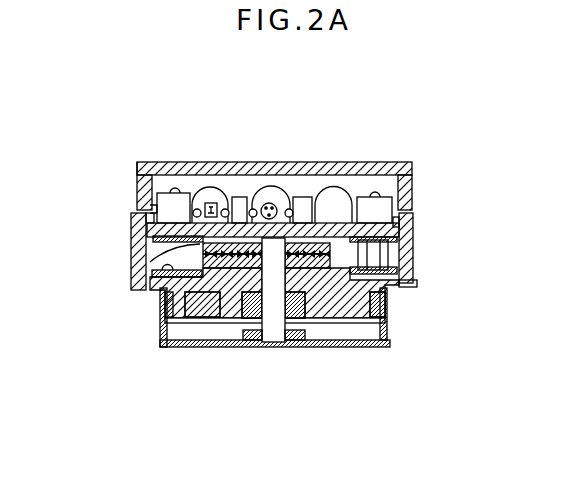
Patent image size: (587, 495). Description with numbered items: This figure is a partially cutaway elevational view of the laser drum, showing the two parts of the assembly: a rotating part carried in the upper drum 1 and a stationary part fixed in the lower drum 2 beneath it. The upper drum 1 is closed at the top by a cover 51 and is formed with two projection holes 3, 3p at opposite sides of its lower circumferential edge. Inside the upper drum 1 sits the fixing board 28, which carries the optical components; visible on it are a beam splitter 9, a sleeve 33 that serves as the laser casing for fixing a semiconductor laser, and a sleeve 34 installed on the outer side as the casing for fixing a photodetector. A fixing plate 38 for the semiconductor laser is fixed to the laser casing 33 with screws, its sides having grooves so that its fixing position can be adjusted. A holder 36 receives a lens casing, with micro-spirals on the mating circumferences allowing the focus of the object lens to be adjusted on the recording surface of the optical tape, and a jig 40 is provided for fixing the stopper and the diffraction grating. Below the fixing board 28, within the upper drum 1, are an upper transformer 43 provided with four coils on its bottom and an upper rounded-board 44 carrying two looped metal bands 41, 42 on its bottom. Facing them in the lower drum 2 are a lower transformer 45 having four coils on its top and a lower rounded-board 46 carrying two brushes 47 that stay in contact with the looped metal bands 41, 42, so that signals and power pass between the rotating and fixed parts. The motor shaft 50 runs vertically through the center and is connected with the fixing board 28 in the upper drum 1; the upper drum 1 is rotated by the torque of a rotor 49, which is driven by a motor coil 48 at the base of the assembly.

The upper drum 1 is at (417, 175).
The lower drum 2 is at (417, 283).
The projection hole 3 is at (417, 210).
The projection hole 3p is at (128, 212).
The beam splitter 9 is at (338, 188).
The fixing board 28 is at (400, 232).
The sleeve 33 is at (269, 203).
The sleeve 34 is at (207, 187).
The holder 36 is at (180, 193).
The fixing plate 38 is at (300, 197).
The jig 40 is at (241, 197).
The looped metal band 41 is at (160, 250).
The looped metal band 42 is at (197, 245).
The upper transformer 43 is at (185, 290).
The upper rounded-board 44 is at (155, 243).
The lower transformer 45 is at (332, 262).
The lower rounded-board 46 is at (157, 275).
The brush 47 is at (395, 265).
The motor coil 48 is at (345, 285).
The rotor 49 is at (390, 343).
The motor shaft 50 is at (272, 342).
The cover 51 is at (148, 162).